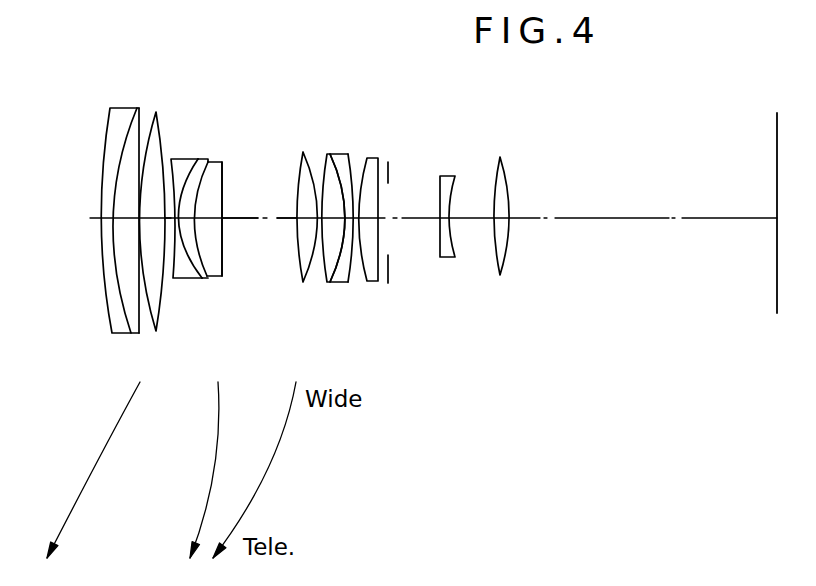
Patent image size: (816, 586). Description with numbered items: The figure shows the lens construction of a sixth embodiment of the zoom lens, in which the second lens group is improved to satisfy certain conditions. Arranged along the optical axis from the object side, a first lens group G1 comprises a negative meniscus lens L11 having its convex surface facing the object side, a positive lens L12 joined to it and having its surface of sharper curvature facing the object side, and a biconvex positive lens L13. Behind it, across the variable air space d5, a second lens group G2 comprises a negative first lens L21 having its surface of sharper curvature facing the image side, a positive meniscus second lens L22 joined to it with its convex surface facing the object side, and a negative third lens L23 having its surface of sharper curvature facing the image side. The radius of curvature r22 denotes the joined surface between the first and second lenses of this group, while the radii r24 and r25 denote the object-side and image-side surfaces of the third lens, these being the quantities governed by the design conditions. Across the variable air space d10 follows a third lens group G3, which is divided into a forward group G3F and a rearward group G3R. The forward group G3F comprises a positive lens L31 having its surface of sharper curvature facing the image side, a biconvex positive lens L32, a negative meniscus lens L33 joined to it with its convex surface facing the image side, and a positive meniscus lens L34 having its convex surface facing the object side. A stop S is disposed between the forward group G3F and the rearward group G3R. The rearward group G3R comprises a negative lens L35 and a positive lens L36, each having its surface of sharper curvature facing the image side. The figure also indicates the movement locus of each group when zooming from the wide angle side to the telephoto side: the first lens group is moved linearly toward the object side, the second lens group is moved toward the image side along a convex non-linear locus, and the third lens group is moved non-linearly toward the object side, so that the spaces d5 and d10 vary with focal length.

The negative meniscus lens L11 is at (112, 120).
The positive lens L12 is at (131, 118).
The biconvex positive lens L13 is at (162, 190).
The negative first lens L21 is at (183, 163).
The positive meniscus second lens L22 is at (213, 165).
The negative third lens L23 is at (222, 157).
The positive lens L31 is at (304, 150).
The biconvex positive lens L32 is at (330, 153).
The negative meniscus lens L33 is at (348, 155).
The positive meniscus lens L34 is at (377, 160).
The negative lens L35 is at (453, 179).
The positive lens L36 is at (516, 187).
The radius of curvature of the joined surface r22 is at (187, 193).
The radius of curvature of object-side surface of third lens r24 is at (199, 205).
The radius of curvature of image-side surface of third lens r25 is at (250, 224).
The air space d5 is at (170, 219).
The air space d10 is at (248, 219).
The stop S is at (392, 175).
The first lens group G1 is at (120, 213).
The second lens group G2 is at (229, 187).
The third lens group G3 is at (412, 207).
The forward group G3F is at (361, 189).
The rearward group G3R is at (486, 212).